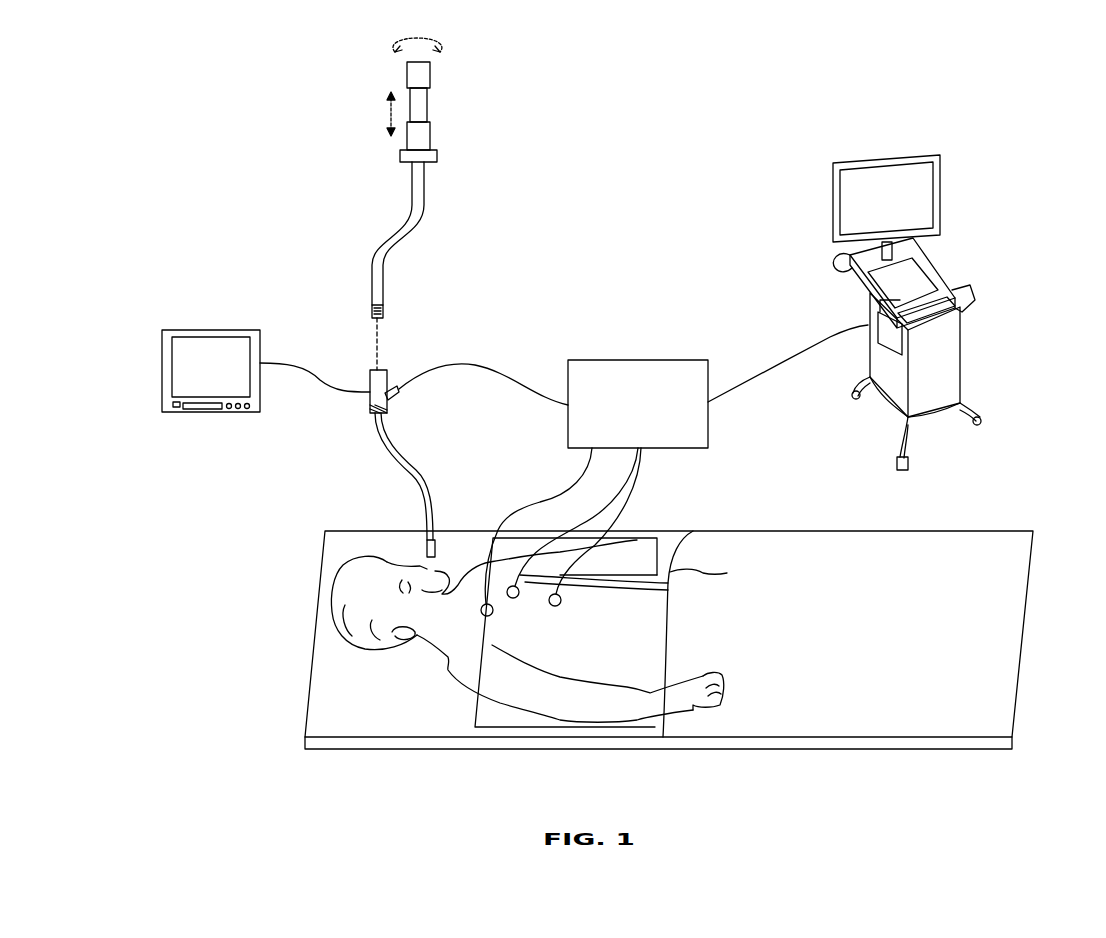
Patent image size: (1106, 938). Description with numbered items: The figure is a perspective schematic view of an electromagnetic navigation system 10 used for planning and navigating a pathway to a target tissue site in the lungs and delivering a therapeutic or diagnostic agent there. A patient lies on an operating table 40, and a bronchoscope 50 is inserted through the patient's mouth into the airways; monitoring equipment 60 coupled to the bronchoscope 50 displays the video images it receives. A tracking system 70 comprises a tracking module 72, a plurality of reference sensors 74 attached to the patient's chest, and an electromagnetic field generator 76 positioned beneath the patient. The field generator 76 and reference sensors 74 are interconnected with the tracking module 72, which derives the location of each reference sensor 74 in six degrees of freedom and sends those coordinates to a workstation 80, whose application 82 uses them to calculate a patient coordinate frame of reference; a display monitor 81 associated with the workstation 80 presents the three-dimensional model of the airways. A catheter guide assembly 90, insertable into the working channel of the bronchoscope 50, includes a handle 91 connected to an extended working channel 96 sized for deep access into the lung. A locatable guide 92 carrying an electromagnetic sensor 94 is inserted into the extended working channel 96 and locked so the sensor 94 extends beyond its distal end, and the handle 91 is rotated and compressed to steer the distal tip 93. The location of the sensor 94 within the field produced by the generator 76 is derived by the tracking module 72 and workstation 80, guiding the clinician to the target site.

The electromagnetic navigation system 10 is at (905, 178).
The operating table 40 is at (322, 682).
The bronchoscope 50 is at (387, 458).
The monitoring equipment 60 is at (178, 413).
The tracking system 70 is at (641, 372).
The tracking module 72 is at (638, 404).
The reference sensors 74 is at (493, 613).
The electromagnetic field generator 76 is at (490, 727).
The workstation 80 is at (960, 358).
The display monitor 81 is at (942, 203).
The application 82 is at (933, 272).
The catheter guide assembly 90 is at (440, 180).
The handle 91 is at (446, 65).
The locatable guide 92 is at (385, 281).
The distal tip 93 is at (372, 308).
The electromagnetic sensor 94 is at (392, 303).
The extended working channel 96 is at (422, 215).